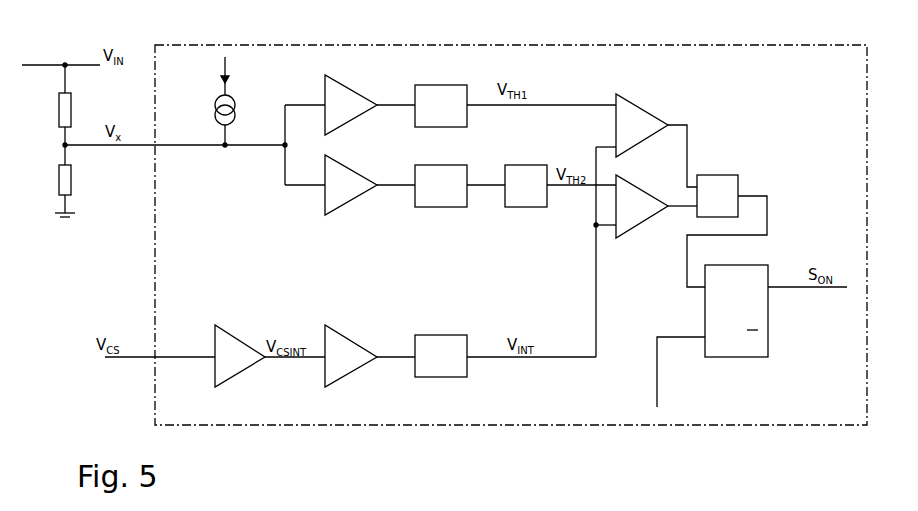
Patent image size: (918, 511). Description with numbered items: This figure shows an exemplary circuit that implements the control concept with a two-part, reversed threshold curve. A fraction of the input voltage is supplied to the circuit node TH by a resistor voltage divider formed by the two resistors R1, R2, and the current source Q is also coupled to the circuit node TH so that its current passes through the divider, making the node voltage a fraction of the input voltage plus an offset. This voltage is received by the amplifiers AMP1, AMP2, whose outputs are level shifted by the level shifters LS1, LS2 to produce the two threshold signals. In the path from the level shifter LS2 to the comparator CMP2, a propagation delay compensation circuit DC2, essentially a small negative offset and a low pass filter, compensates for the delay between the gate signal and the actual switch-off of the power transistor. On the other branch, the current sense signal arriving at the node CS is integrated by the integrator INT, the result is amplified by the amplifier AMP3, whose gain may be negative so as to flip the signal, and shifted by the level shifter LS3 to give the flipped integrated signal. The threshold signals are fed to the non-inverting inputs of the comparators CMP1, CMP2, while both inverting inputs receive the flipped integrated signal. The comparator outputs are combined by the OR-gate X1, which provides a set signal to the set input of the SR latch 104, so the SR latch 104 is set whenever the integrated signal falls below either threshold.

The SR latch 104 is at (749, 321).
The resistor R1 is at (75, 110).
The resistor R2 is at (75, 180).
The circuit node TH is at (178, 146).
The current source Q is at (223, 101).
The amplifier AMP1 is at (354, 114).
The amplifier AMP2 is at (354, 194).
The amplifier AMP3 is at (354, 363).
The level shifter LS1 is at (441, 117).
The level shifter LS2 is at (441, 197).
The level shifter LS3 is at (441, 367).
The propagation delay compensation circuit DC2 is at (526, 201).
The comparator CMP1 is at (645, 122).
The comparator CMP2 is at (642, 216).
The OR-gate X1 is at (725, 189).
The current sense node CS is at (160, 357).
The integrator INT is at (225, 365).